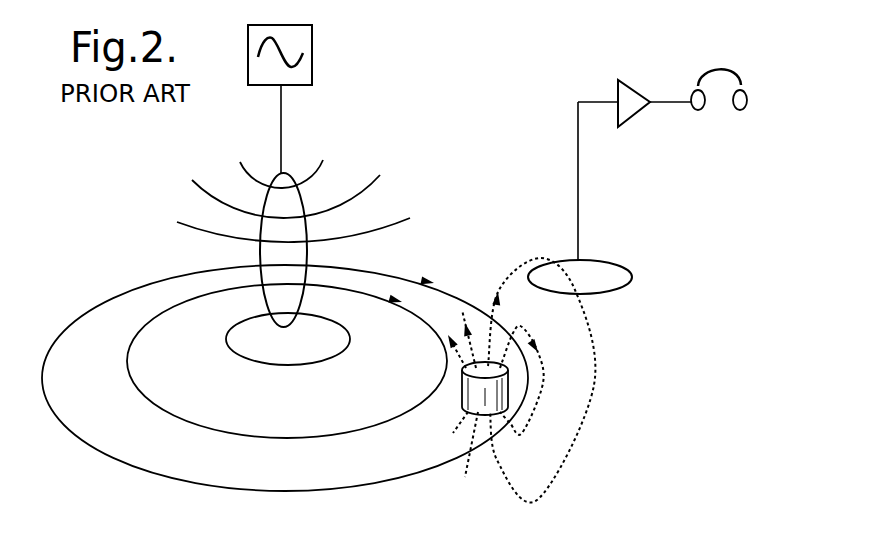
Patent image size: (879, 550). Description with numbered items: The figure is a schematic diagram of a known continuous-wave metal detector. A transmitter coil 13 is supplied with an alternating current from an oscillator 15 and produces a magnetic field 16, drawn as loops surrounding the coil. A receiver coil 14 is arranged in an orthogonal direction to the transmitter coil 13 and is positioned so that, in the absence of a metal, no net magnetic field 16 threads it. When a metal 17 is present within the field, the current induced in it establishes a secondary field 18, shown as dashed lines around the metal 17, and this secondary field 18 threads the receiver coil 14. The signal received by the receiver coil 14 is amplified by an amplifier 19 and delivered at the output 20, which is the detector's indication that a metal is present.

The transmitter coil 13 is at (294, 168).
The receiver coil 14 is at (625, 257).
The oscillator 15 is at (312, 37).
The magnetic field 16 is at (156, 416).
The metal 17 is at (450, 403).
The secondary field 18 is at (587, 391).
The amplifier 19 is at (634, 93).
The output 20 is at (742, 75).